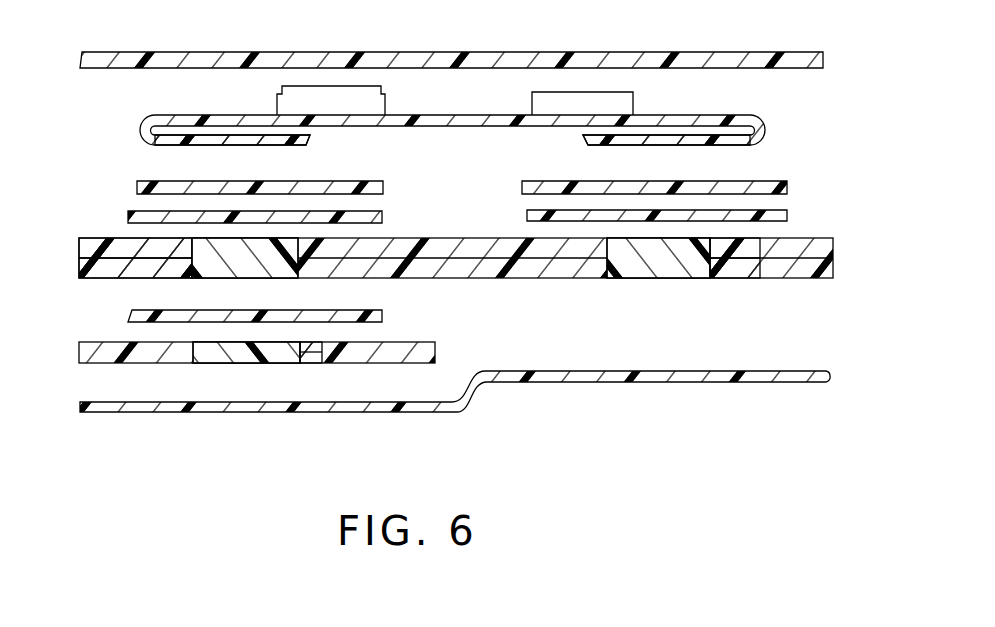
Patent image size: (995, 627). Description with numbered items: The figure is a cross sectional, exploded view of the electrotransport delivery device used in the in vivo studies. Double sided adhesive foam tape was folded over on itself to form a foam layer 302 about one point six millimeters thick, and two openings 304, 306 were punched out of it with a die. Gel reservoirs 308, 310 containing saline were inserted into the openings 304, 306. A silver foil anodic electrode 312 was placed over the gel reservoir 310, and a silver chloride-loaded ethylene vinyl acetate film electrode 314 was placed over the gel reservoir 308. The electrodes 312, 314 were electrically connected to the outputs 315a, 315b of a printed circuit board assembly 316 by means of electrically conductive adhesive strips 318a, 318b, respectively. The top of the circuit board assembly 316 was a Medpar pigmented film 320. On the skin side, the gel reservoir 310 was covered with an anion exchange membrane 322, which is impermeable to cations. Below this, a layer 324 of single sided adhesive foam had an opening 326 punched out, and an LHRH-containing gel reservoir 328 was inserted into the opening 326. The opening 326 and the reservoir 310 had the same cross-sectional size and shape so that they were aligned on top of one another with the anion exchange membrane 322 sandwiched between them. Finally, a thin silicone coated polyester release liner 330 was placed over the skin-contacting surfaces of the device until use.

The foam layer 302 is at (832, 248).
The opening 304 is at (713, 245).
The opening 306 is at (300, 255).
The gel reservoir 308 is at (617, 266).
The gel reservoir 310 is at (210, 273).
The silver foil anodic electrode 312 is at (128, 216).
The silver chloride-loaded ethylene vinyl acetate film electrode 314 is at (787, 214).
The output 315a is at (205, 146).
The output 315b is at (672, 147).
The printed circuit board assembly 316 is at (147, 125).
The electrically conductive adhesive strip 318a is at (137, 187).
The electrically conductive adhesive strip 318b is at (787, 183).
The pigmented film 320 is at (737, 57).
The anion exchange membrane 322 is at (131, 316).
The layer of single sided adhesive foam 324 is at (78, 347).
The opening 326 is at (324, 355).
The LHRH-containing gel reservoir 328 is at (233, 356).
The release liner 330 is at (112, 408).